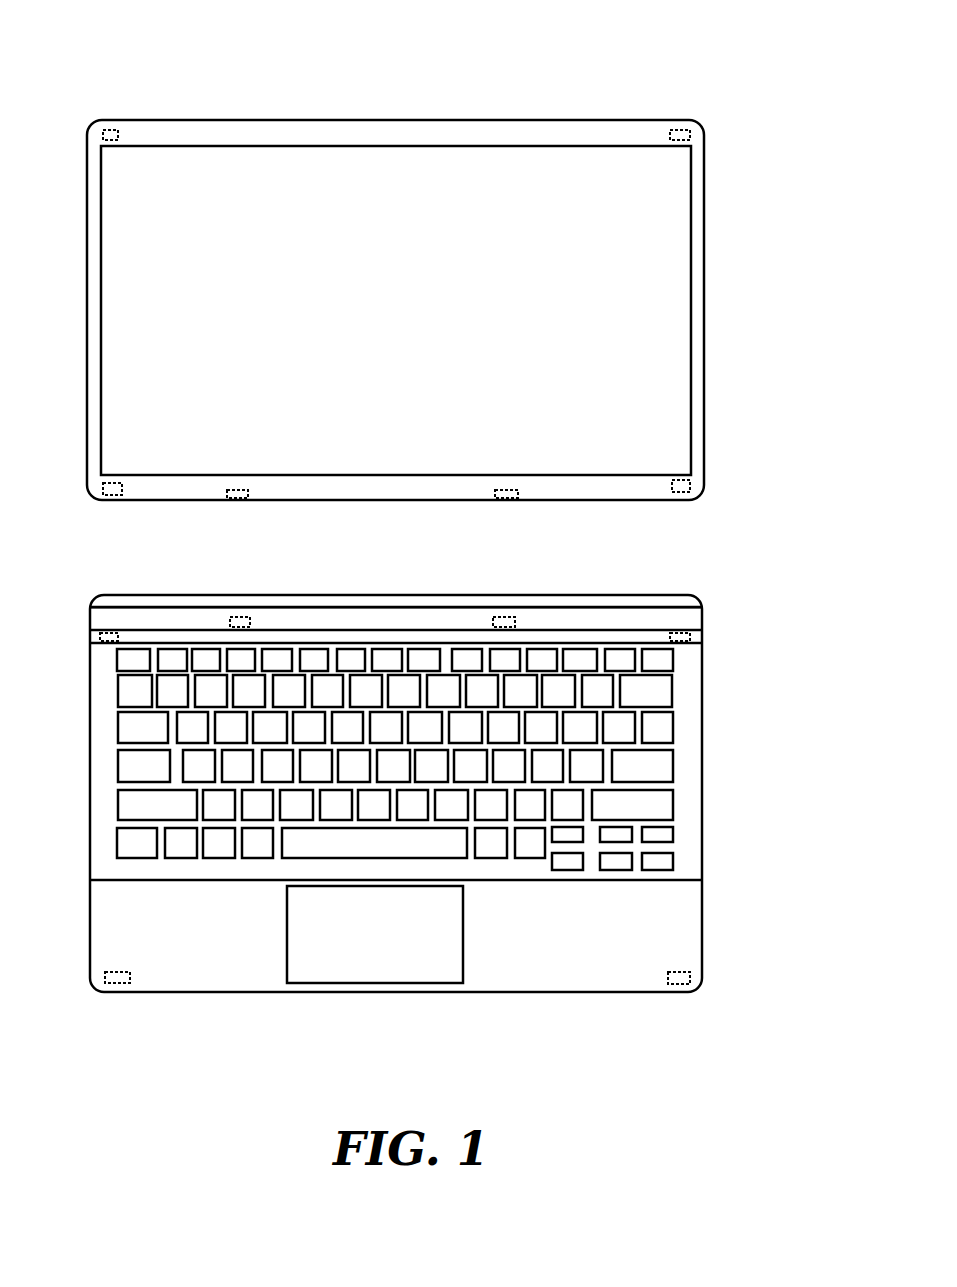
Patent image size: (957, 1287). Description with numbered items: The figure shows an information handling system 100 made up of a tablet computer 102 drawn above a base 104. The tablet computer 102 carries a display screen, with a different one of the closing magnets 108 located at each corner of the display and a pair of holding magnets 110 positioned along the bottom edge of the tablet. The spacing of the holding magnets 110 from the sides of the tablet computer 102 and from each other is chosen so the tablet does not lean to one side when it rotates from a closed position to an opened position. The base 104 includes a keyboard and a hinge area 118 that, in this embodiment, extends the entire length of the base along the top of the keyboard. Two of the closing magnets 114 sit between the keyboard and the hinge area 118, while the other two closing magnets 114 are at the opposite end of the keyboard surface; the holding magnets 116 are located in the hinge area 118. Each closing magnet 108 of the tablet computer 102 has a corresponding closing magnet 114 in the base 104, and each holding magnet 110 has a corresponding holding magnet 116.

The information handling system 100 is at (660, 50).
The tablet computer 102 is at (763, 279).
The base 104 is at (757, 857).
The closing magnets 108 is at (110, 128).
The holding magnets 110 is at (238, 498).
The closing magnets 114 is at (100, 641).
The holding magnets 116 is at (240, 616).
The hinge area 118 is at (98, 621).